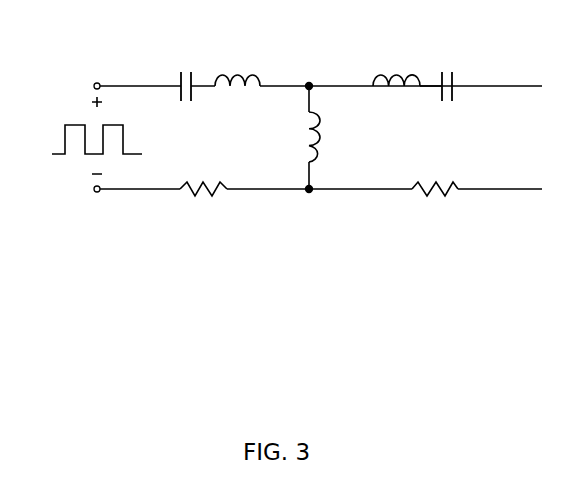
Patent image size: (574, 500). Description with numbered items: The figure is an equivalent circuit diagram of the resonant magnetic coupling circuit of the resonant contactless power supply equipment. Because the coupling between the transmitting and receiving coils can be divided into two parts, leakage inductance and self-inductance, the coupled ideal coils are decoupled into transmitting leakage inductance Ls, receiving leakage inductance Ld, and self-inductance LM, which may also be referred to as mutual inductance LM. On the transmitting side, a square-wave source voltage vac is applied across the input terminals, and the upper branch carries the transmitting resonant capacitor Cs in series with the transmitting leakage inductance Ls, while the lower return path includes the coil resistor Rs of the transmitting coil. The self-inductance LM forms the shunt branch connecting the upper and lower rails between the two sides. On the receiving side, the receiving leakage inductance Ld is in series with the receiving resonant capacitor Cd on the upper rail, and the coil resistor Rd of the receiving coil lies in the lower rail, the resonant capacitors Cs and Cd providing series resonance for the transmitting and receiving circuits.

The AC source voltage (square wave) vac is at (83, 139).
The transmitting resonant capacitor Cs is at (185, 72).
The transmitting leakage inductance Ls is at (237, 65).
The self-inductance LM is at (295, 137).
The coil resistor Rs is at (203, 173).
The receiving leakage inductance Ld is at (407, 65).
The receiving resonant capacitor Cd is at (446, 72).
The coil resistor Rd is at (435, 173).